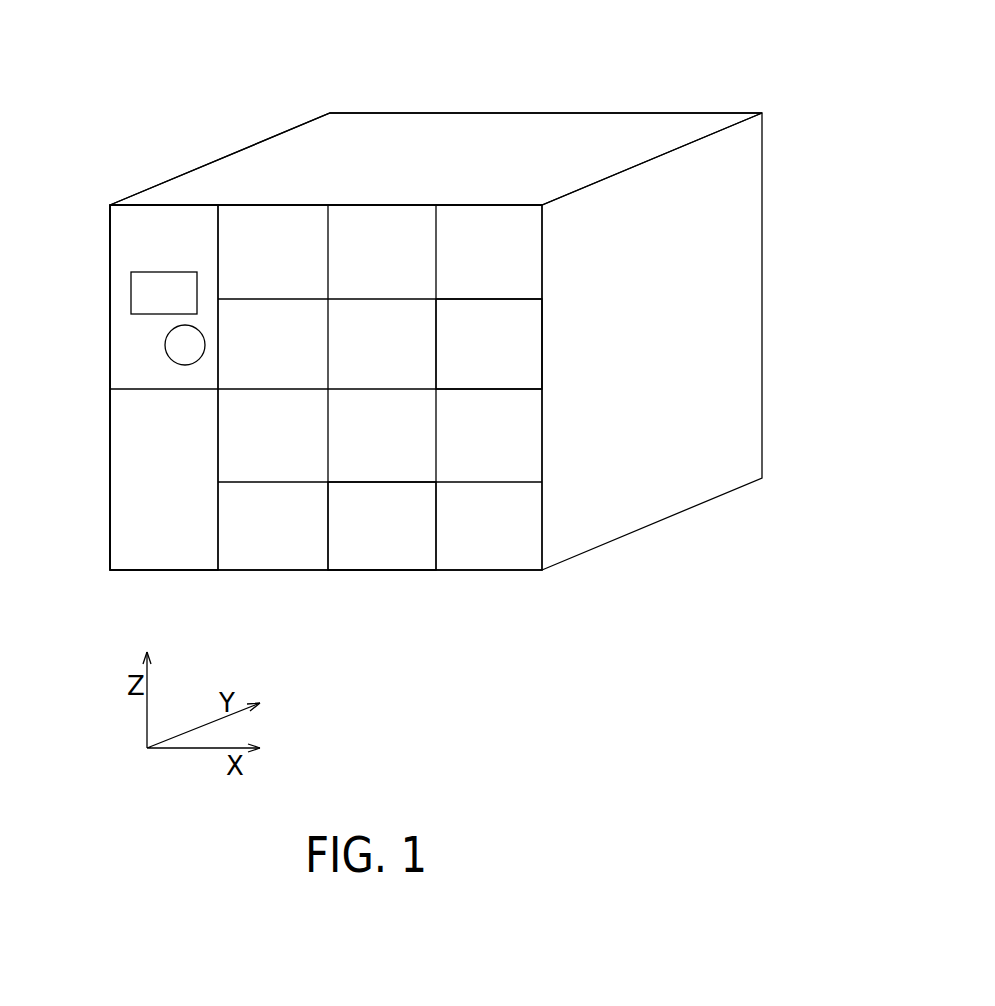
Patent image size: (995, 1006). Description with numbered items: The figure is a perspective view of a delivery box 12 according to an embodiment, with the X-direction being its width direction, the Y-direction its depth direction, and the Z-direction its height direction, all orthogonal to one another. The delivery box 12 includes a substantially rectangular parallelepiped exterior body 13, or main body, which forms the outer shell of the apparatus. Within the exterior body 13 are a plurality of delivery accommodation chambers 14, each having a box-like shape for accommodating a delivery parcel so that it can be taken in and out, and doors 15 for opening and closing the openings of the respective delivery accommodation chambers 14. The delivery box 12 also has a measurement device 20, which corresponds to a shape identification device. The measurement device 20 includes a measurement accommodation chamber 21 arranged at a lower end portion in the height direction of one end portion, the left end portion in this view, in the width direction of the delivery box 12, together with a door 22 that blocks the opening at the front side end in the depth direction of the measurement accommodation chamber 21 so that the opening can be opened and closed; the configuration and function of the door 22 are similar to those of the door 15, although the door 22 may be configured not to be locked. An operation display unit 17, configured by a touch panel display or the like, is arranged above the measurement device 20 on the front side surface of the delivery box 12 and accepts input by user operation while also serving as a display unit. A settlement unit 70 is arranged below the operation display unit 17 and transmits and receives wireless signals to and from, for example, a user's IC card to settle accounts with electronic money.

The delivery box 12 is at (518, 78).
The exterior body 13 is at (555, 132).
The delivery accommodation chamber 14 is at (513, 331).
The door 15 is at (490, 365).
The operation display unit 17 is at (140, 294).
The measurement device 20 is at (150, 472).
The measurement accommodation chamber 21 is at (183, 540).
The door 22 is at (135, 530).
The settlement unit 70 is at (183, 363).